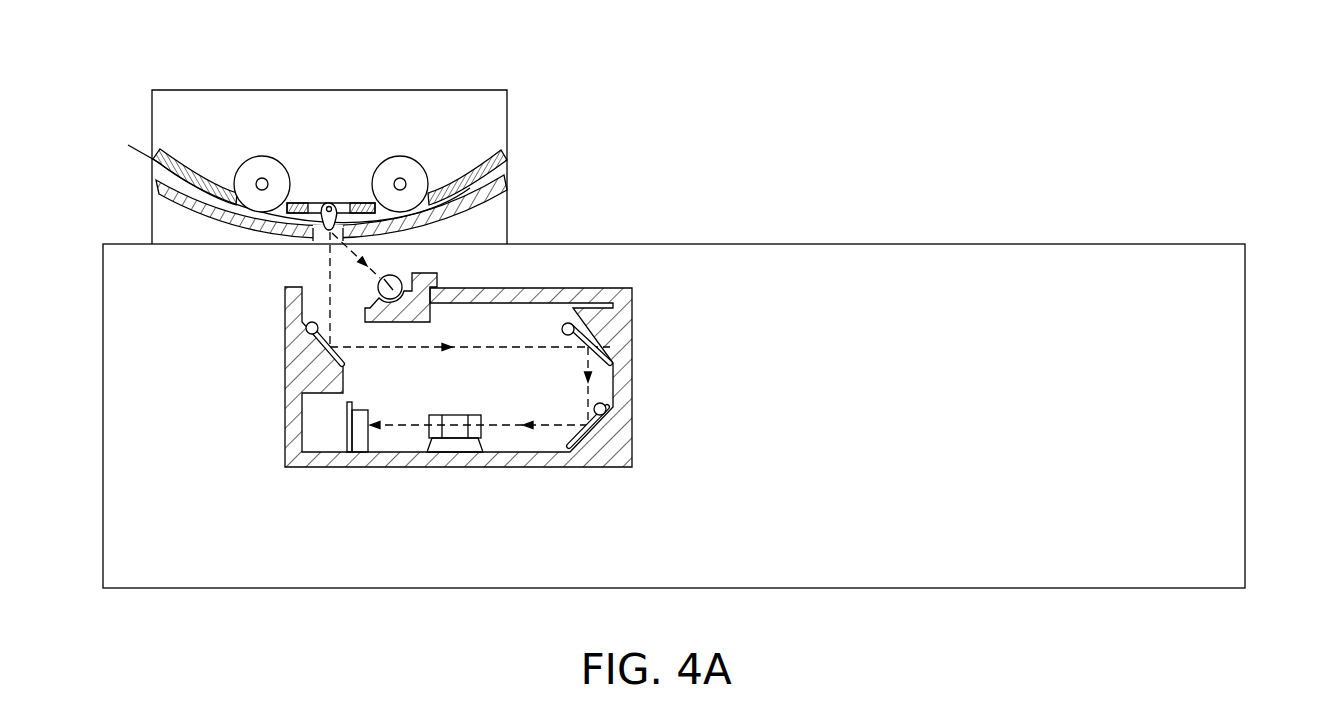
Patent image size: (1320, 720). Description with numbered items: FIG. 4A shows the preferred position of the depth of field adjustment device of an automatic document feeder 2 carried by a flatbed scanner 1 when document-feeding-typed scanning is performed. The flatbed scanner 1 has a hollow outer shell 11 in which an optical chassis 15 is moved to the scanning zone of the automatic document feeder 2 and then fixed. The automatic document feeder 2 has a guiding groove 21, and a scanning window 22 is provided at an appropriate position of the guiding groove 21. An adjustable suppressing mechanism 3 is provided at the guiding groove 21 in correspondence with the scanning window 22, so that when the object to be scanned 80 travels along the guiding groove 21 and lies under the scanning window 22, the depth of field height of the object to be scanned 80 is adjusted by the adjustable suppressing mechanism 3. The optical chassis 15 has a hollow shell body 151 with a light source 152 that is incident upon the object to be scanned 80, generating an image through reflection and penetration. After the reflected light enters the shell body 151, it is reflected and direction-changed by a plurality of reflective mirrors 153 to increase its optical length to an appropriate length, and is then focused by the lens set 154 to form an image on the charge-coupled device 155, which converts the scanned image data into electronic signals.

The flatbed scanner 1 is at (1263, 191).
The automatic document feeder 2 is at (508, 124).
The adjustable suppressing mechanism 3 is at (337, 192).
The outer shell 11 is at (1246, 326).
The optical chassis 15 is at (440, 362).
The guiding groove 21 is at (381, 143).
The scanning window 22 is at (315, 226).
The object to be scanned 80 is at (163, 151).
The shell body 151 is at (290, 440).
The light source 152 is at (402, 274).
The reflective mirrors 153 is at (288, 343).
The lens set 154 is at (455, 424).
The charge-coupled device 155 is at (361, 438).